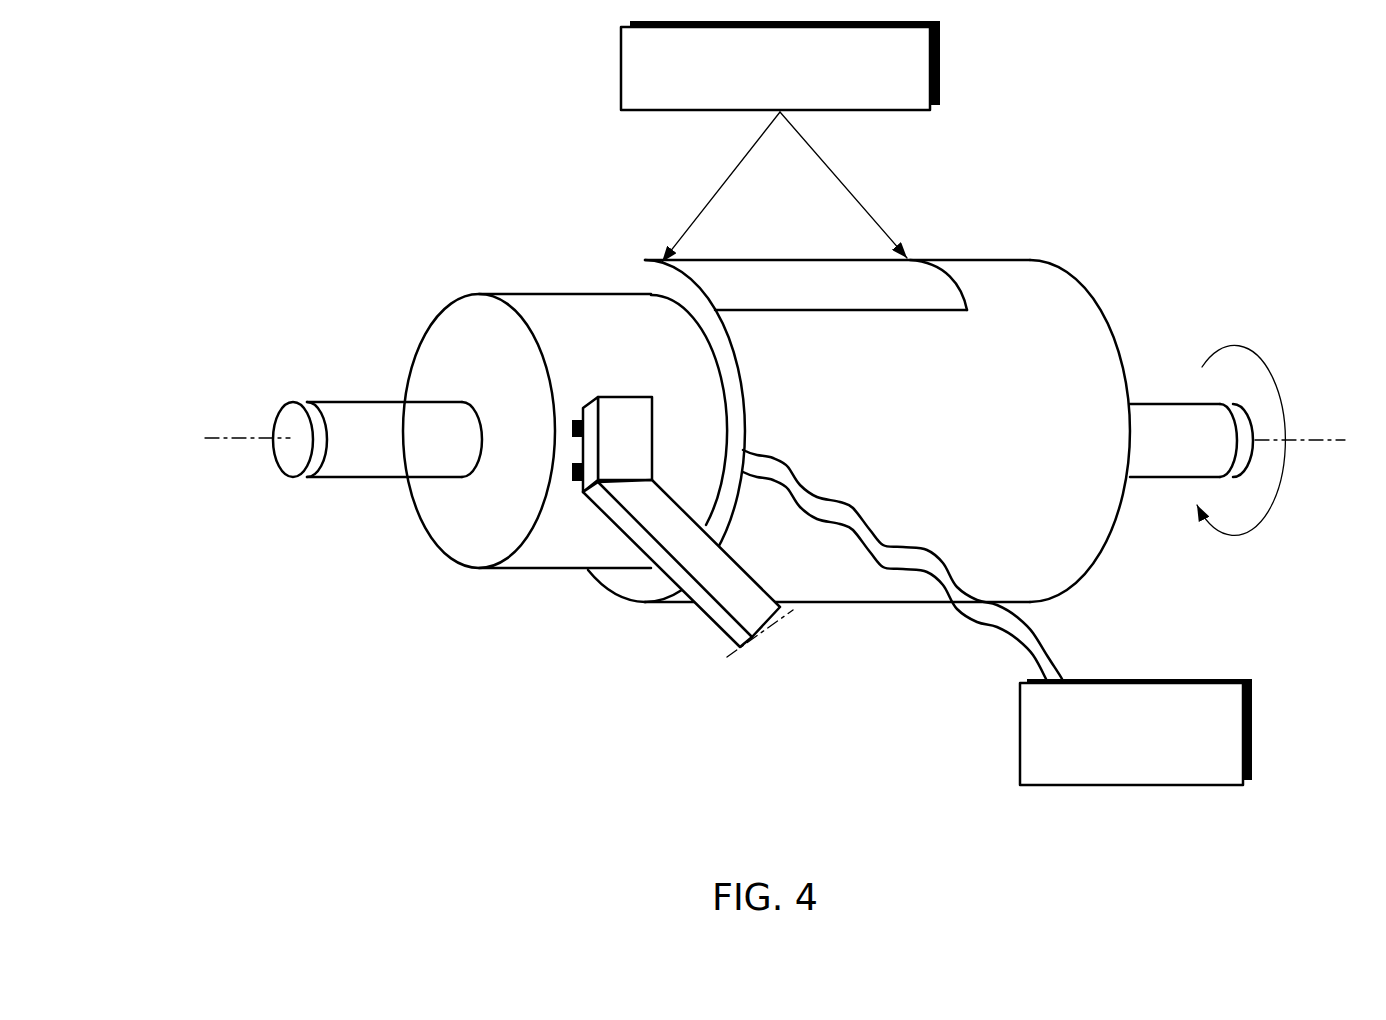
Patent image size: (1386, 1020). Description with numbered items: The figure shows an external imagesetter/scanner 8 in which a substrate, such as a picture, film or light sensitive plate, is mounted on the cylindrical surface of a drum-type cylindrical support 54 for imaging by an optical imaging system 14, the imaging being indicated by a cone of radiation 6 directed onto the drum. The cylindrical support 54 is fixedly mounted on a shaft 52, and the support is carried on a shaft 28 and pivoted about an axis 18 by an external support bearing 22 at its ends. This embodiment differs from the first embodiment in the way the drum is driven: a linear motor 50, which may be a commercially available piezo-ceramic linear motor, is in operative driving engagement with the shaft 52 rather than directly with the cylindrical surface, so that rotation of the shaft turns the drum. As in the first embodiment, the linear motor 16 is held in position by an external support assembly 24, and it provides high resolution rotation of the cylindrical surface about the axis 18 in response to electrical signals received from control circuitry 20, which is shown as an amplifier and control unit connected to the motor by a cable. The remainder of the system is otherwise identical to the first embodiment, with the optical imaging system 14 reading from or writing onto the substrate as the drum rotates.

The cone of radiation 6 is at (707, 202).
The external imagesetter/scanner 8 is at (1122, 190).
The optical imaging system 14 is at (940, 60).
The linear motor 16 is at (717, 437).
The axis 18 is at (263, 438).
The control circuitry 20 is at (1150, 680).
The external support bearing 22 is at (293, 436).
The external support assembly 24 is at (735, 627).
The shaft 28 is at (405, 462).
The linear motor 50 is at (613, 412).
The shaft 52 is at (578, 540).
The cylindrical support 54 is at (868, 572).